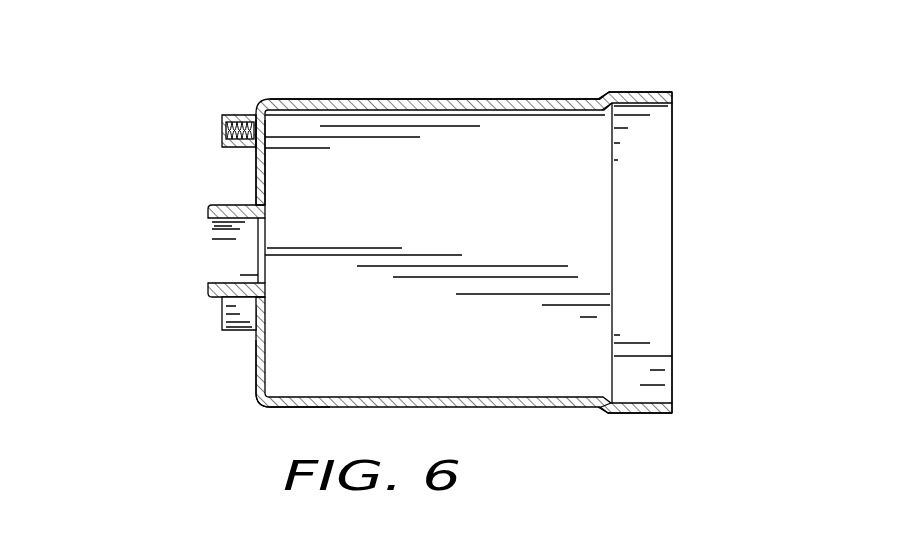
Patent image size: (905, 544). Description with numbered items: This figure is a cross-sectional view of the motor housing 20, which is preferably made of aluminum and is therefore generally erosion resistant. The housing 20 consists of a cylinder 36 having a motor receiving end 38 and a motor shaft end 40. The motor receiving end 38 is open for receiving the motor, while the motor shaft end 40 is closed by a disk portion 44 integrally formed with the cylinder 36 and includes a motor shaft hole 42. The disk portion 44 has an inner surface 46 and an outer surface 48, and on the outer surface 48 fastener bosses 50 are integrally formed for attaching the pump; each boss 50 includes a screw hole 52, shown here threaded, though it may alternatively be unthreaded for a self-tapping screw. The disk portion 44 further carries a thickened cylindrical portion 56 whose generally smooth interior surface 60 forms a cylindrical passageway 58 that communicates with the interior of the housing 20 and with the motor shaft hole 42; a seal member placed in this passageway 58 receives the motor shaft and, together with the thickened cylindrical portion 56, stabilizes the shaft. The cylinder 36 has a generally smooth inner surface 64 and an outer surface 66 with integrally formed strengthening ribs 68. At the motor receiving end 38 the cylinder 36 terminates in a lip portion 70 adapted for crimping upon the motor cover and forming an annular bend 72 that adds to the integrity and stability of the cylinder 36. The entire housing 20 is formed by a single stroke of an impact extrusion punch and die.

The housing 20 is at (473, 97).
The cylinder 36 is at (367, 99).
The motor receiving end 38 is at (651, 71).
The motor shaft end 40 is at (424, 234).
The motor shaft hole 42 is at (243, 259).
The disk portion 44 is at (257, 176).
The inner surface 46 is at (262, 325).
The outer surface 48 is at (256, 355).
The fastener bosses 50 is at (226, 118).
The screw hole 52 is at (237, 125).
The thickened cylindrical portion 56 is at (215, 206).
The cylindrical passageway 58 is at (222, 250).
The interior surface 60 is at (222, 234).
The inner surface 64 is at (447, 184).
The outer surface 66 is at (431, 99).
The strengthening ribs 68 is at (563, 99).
The lip portion 70 is at (658, 400).
The annular bend 72 is at (606, 96).